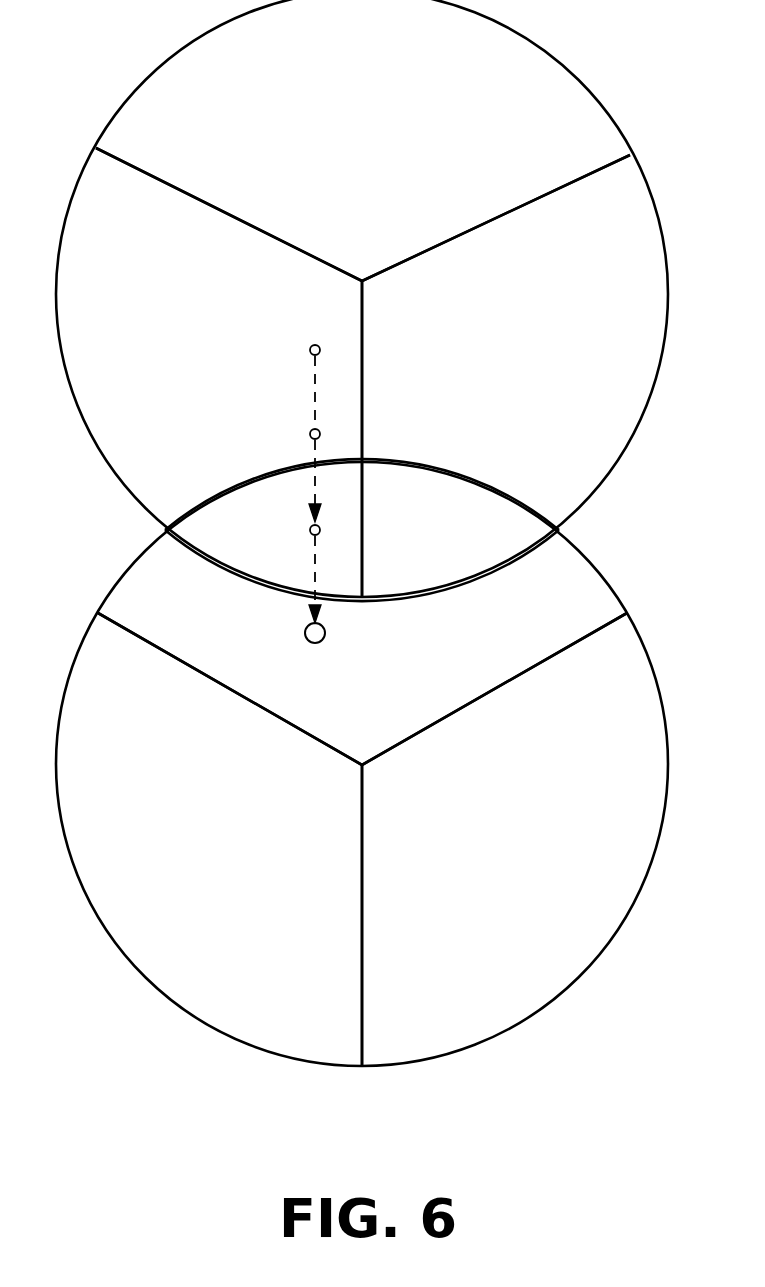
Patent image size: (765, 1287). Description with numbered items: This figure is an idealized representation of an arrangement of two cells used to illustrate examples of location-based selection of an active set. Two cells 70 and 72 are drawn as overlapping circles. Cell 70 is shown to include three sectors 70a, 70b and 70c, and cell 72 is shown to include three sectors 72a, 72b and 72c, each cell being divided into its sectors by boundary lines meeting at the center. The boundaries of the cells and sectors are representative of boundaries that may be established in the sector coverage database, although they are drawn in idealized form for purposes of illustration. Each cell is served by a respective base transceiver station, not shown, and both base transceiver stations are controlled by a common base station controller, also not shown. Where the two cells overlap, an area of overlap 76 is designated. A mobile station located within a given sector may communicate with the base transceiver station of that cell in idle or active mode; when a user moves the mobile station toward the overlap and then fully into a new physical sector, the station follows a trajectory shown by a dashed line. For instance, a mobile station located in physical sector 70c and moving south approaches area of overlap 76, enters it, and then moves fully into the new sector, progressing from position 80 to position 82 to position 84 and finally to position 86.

The cell 70 is at (575, 73).
The sector 70a is at (363, 214).
The sector 70b is at (496, 376).
The sector 70c is at (229, 372).
The cell 72 is at (111, 942).
The sector 72a is at (362, 689).
The sector 72b is at (494, 839).
The sector 72c is at (230, 839).
The area of overlap 76 is at (362, 530).
The position 80 is at (310, 347).
The position 82 is at (310, 432).
The position 84 is at (321, 531).
The position 86 is at (325, 634).